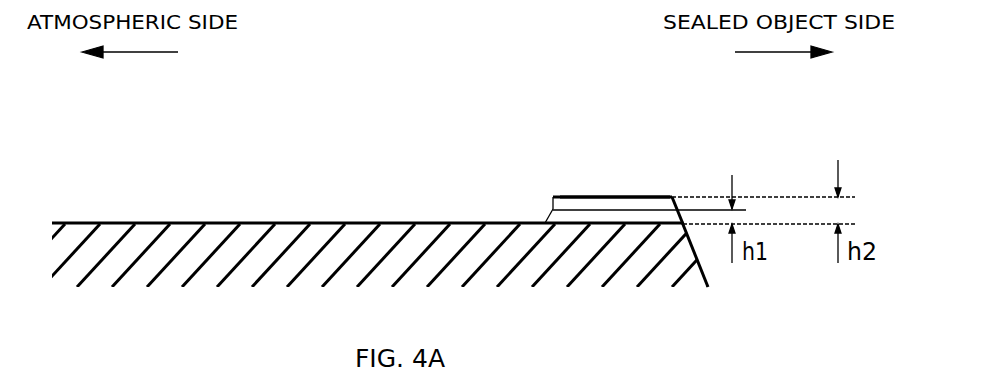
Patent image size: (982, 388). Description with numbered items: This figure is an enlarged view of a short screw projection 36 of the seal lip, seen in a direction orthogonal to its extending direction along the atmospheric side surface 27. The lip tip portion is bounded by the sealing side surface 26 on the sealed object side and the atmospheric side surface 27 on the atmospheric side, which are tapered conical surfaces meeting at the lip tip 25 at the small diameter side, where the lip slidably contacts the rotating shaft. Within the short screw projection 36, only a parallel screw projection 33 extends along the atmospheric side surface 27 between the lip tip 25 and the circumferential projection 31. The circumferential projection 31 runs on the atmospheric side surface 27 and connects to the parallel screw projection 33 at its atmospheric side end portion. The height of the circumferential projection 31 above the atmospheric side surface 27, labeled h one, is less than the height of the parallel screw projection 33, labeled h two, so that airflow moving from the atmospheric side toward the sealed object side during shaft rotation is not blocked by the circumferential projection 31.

The lip tip 25 is at (692, 223).
The sealing side surface 26 is at (698, 258).
The atmospheric side surface 27 is at (290, 222).
The circumferential projection 31 is at (545, 223).
The parallel screw projection 33 is at (576, 196).
The short screw projection 36 is at (644, 193).